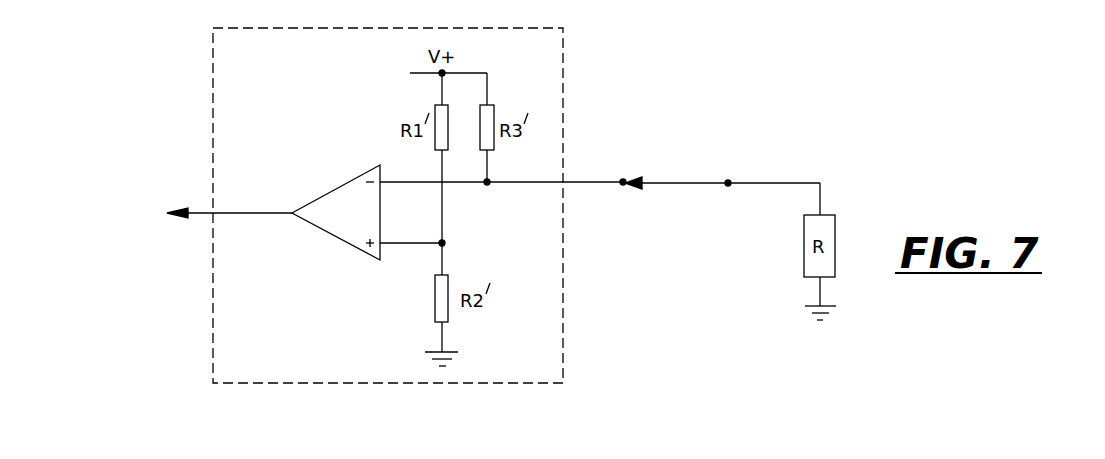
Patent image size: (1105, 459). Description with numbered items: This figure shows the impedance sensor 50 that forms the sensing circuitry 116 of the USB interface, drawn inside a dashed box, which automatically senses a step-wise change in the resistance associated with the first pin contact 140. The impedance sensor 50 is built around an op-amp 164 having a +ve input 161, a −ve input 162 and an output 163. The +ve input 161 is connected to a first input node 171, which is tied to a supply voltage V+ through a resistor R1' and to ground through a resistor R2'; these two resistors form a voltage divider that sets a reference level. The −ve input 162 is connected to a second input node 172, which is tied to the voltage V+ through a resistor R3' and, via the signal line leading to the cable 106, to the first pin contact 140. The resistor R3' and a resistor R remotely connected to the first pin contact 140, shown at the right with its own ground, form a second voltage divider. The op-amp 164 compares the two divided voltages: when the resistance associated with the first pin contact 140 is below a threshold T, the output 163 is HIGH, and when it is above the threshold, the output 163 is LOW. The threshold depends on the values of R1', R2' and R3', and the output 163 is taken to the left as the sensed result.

The sensing circuitry 116 is at (213, 108).
The impedance sensor 50 is at (600, 109).
The first pin contact 140 is at (623, 181).
The cable 106 is at (685, 181).
The +ve input 161 is at (381, 261).
The −ve input 162 is at (383, 165).
The output 163 is at (292, 210).
The op-amp 164 is at (338, 198).
The first input node 171 is at (445, 243).
The second input node 172 is at (488, 185).